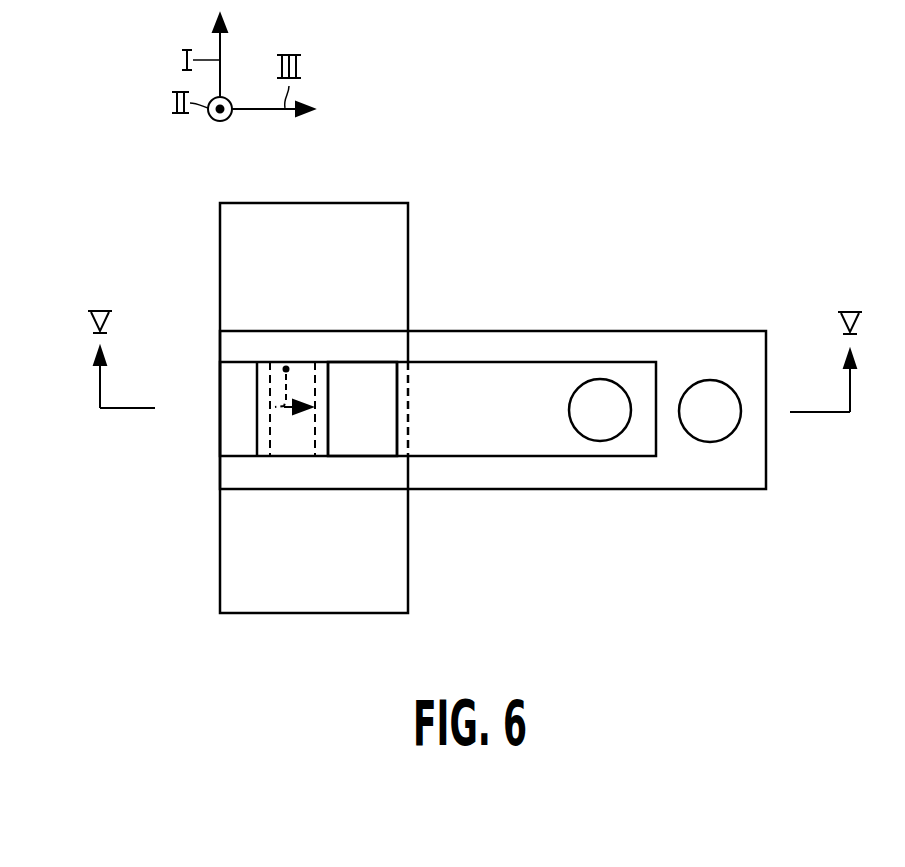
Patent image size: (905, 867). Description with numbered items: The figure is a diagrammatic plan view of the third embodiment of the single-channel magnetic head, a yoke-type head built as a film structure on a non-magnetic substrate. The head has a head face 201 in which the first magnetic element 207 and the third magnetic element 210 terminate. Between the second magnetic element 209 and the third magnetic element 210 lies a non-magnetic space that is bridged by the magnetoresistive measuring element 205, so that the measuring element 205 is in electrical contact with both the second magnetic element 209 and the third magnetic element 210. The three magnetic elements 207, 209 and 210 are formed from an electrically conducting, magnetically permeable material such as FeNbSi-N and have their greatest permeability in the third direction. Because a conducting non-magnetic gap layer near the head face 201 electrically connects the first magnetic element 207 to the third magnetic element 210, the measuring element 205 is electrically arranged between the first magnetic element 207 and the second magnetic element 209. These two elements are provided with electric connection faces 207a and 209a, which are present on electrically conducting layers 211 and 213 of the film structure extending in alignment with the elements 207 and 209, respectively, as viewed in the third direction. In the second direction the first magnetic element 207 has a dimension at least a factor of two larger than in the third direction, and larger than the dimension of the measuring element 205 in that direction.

The head face 201 is at (218, 437).
The magnetoresistive measuring element 205 is at (288, 447).
The first magnetic element 207 is at (339, 220).
The electric connection face 207a is at (713, 397).
The second magnetic element 209 is at (368, 445).
The electric connection face 209a is at (597, 393).
The third magnetic element 210 is at (237, 388).
The electrically conducting layer 211 is at (523, 348).
The electrically conducting layer 213 is at (465, 373).